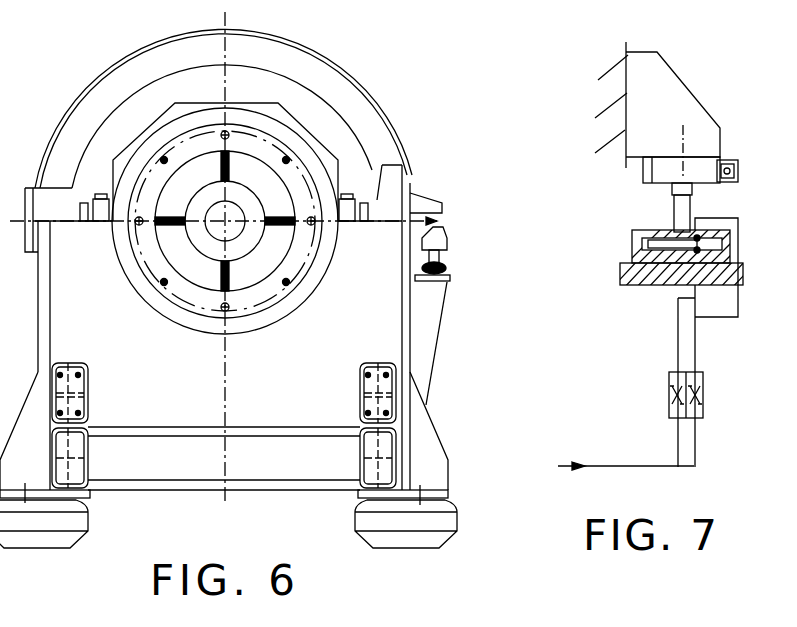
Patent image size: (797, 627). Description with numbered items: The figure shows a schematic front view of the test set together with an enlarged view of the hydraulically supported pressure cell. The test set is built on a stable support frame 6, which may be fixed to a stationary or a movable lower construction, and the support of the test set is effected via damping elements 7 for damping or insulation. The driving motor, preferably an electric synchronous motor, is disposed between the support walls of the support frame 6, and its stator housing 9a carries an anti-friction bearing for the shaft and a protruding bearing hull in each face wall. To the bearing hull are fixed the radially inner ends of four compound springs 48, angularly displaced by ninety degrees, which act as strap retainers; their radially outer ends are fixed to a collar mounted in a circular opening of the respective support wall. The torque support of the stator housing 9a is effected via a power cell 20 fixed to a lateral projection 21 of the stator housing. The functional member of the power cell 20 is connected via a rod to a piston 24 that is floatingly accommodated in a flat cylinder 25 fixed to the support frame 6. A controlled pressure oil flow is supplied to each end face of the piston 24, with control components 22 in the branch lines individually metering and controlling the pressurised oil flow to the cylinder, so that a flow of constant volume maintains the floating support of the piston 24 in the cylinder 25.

In FIG. 6, the support frame 6 is at (152, 372).
In FIG. 7, the support frame 6 is at (628, 275).
In FIG. 6, the damping elements 7 is at (43, 530).
In FIG. 6, the stator housing 9a is at (345, 72).
In FIG. 7, the stator housing 9a is at (605, 72).
In FIG. 6, the power cell 20 is at (447, 253).
In FIG. 7, the power cell 20 is at (697, 167).
In FIG. 6, the lateral projection 21 is at (442, 235).
In FIG. 7, the lateral projection 21 is at (672, 97).
In FIG. 7, the control components 22 is at (690, 373).
In FIG. 6, the piston 24 is at (448, 270).
In FIG. 7, the piston 24 is at (673, 241).
In FIG. 7, the flat cylinder 25 is at (662, 250).
In FIG. 6, the compound springs 48 is at (157, 219).